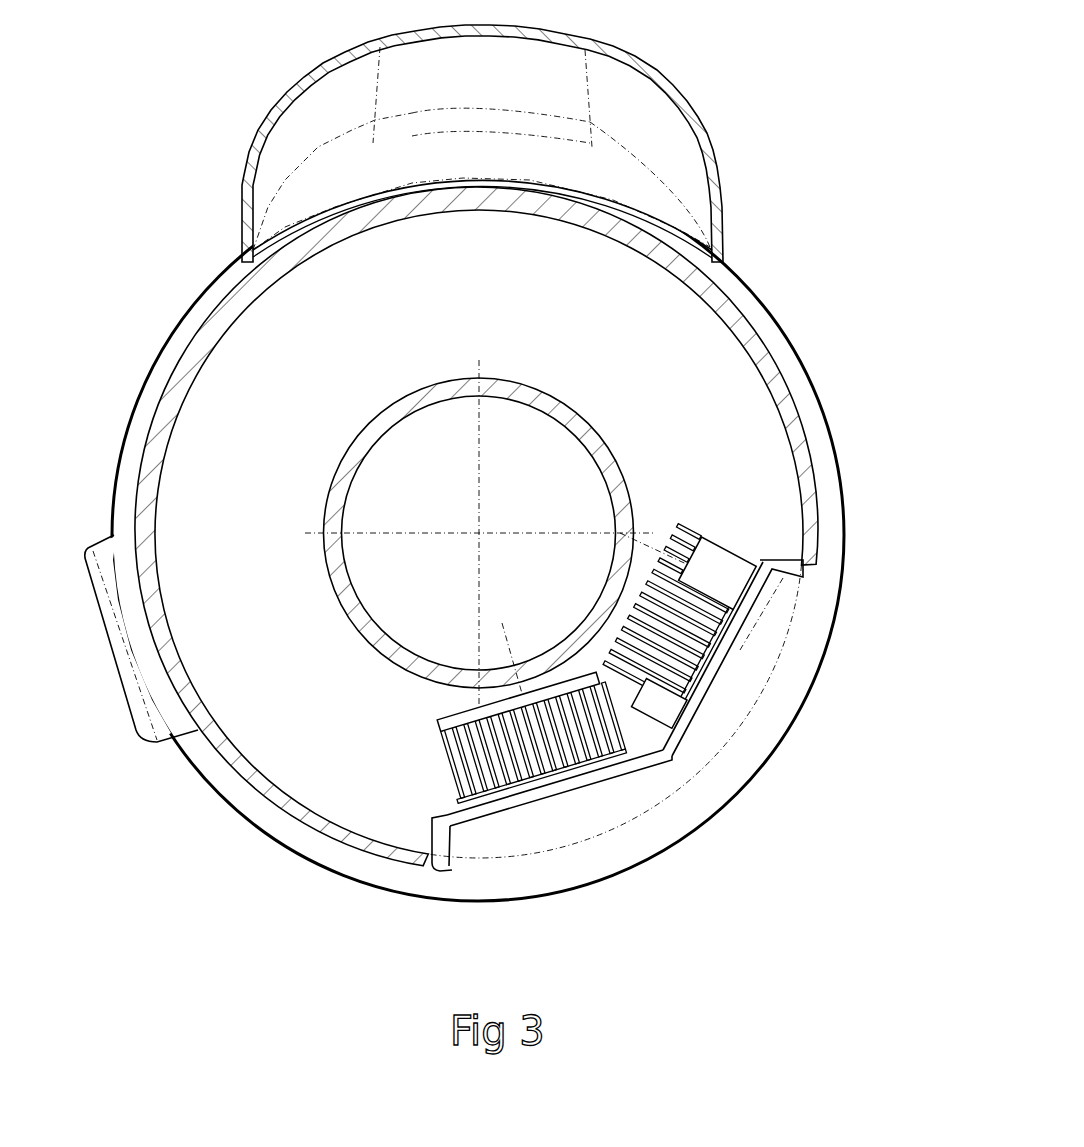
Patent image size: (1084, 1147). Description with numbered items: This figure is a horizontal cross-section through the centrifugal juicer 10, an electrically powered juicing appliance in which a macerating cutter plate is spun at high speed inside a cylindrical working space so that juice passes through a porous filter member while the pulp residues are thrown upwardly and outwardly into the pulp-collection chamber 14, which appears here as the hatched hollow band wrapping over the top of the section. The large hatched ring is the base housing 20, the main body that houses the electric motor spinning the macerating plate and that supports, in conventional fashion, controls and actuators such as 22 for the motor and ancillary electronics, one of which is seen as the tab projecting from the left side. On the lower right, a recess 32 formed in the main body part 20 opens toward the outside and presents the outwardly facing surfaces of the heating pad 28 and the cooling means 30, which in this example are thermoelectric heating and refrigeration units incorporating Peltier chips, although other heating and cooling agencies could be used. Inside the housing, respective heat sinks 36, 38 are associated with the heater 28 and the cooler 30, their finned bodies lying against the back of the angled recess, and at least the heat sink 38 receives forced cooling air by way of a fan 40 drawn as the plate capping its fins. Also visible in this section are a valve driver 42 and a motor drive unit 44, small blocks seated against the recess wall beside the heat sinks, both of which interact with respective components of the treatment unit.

The centrifugal juicer 10 is at (184, 215).
The pulp-collection chamber 14 is at (652, 78).
The base housing 20 is at (735, 318).
The controls and actuators 22 is at (118, 652).
The heating pad 28 is at (727, 653).
The cooling means 30 is at (553, 800).
The recess 32 is at (447, 840).
The heat sink 36 is at (676, 560).
The heat sink 38 is at (457, 757).
The fan 40 is at (457, 716).
The valve driver 42 is at (658, 703).
The motor drive unit 44 is at (728, 577).